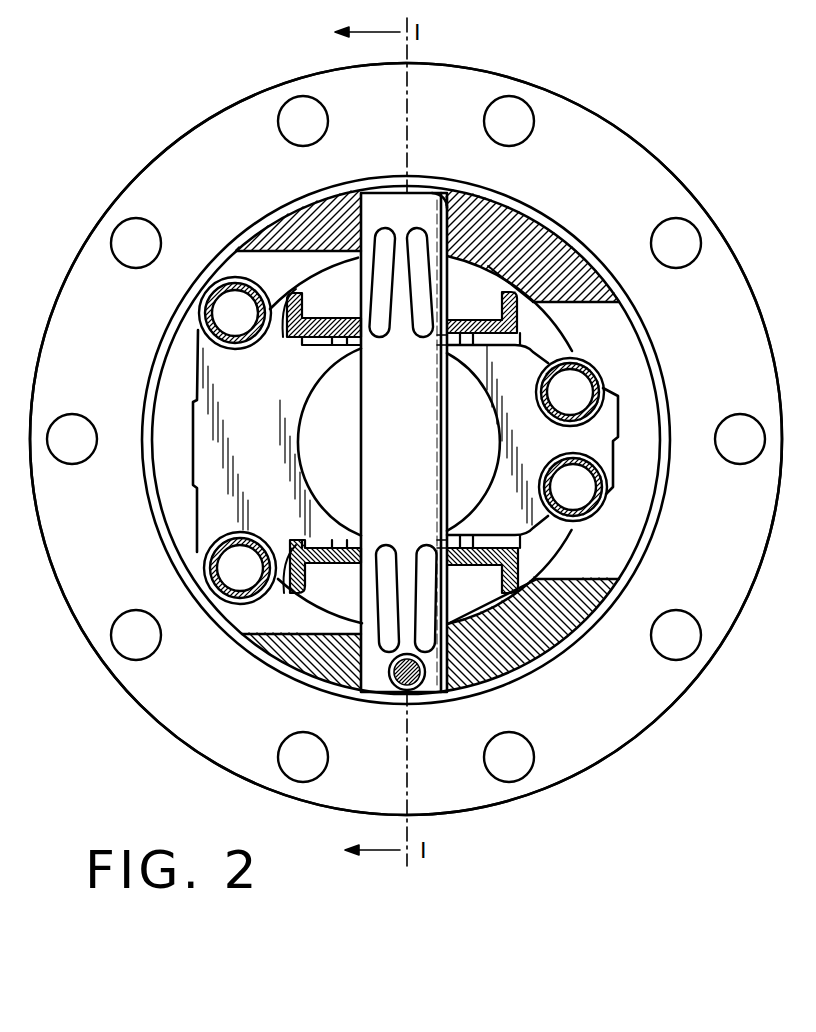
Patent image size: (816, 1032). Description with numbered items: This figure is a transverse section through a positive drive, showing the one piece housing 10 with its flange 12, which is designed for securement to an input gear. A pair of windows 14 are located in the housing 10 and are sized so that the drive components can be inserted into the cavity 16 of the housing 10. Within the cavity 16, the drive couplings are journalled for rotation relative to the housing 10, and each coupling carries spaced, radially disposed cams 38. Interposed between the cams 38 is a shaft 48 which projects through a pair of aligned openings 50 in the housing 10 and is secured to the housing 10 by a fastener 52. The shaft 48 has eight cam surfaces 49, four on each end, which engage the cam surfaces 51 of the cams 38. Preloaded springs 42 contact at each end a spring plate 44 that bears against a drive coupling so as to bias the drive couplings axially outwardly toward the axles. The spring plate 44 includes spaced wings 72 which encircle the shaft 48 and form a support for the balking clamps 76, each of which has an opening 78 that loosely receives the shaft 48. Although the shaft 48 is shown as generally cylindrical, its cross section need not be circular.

The housing 10 is at (573, 647).
The flange 12 is at (573, 145).
The windows 14 is at (228, 263).
The cavity 16 is at (530, 283).
The cams 38 is at (320, 213).
The preloaded springs 42 is at (205, 327).
The spring plate 44 is at (203, 420).
The shaft 48 is at (393, 430).
The cam surfaces 49 is at (417, 245).
The aligned openings 50 is at (437, 193).
The cam surfaces 51 is at (333, 288).
The fastener 52 is at (412, 690).
The wings 72 is at (327, 343).
The balking clamps 76 is at (565, 303).
The opening 78 is at (440, 340).